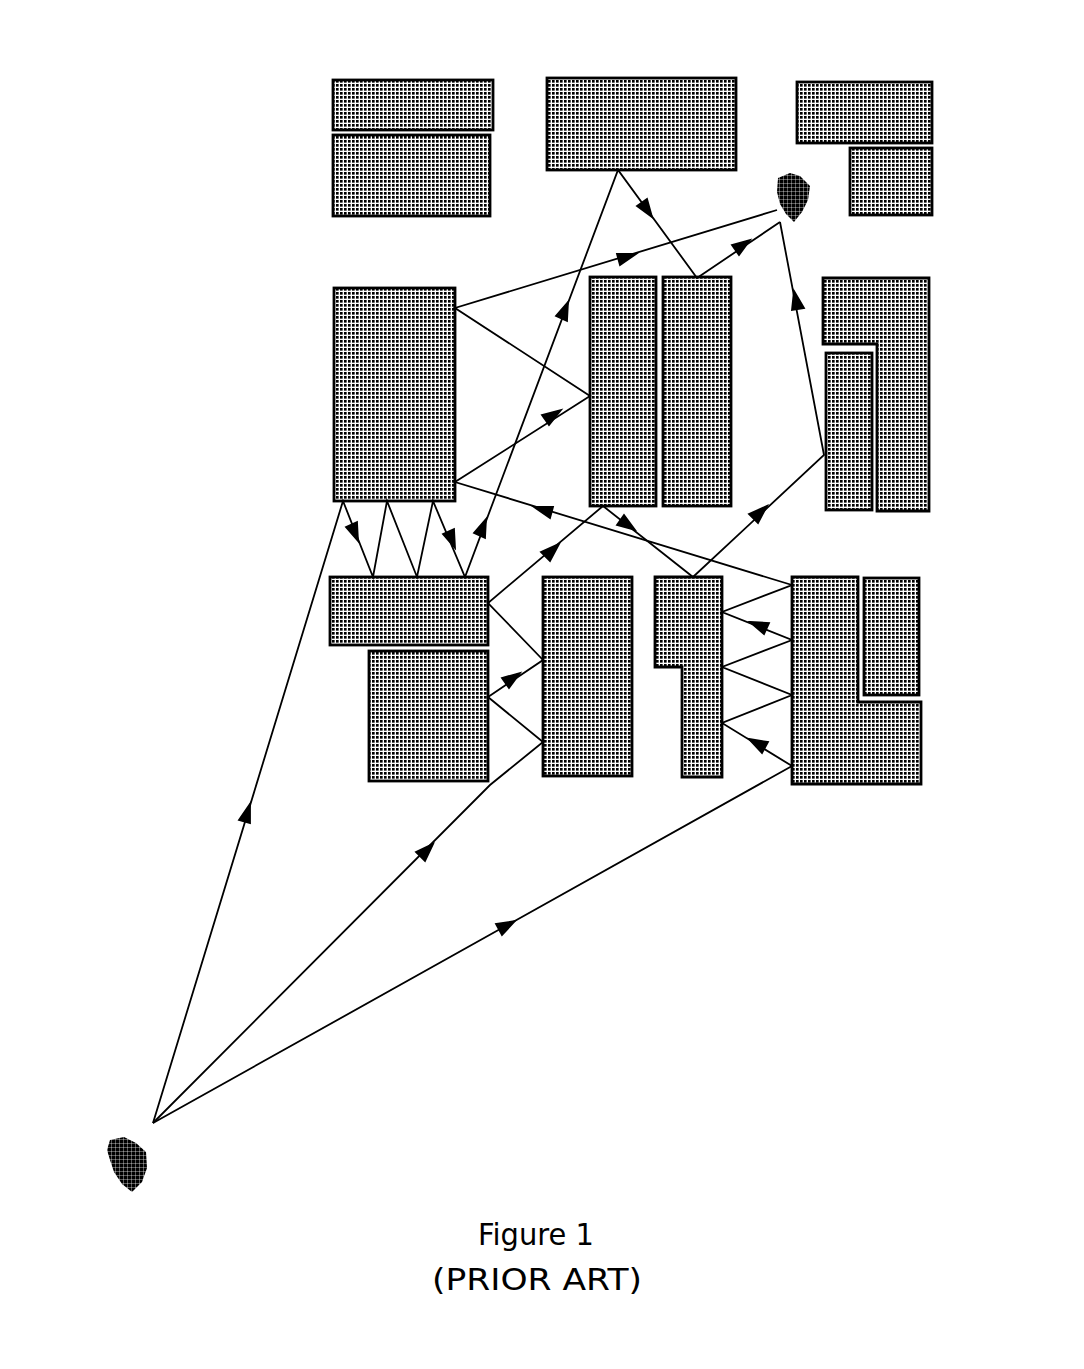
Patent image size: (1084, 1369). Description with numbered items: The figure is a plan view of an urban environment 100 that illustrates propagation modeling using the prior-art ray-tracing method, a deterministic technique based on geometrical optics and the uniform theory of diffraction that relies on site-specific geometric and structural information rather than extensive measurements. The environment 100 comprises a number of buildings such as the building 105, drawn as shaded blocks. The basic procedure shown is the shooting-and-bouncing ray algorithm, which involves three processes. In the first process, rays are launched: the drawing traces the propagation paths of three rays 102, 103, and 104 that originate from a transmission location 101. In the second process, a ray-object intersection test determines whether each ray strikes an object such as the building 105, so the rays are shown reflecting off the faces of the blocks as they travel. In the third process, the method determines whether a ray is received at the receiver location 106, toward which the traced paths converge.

The urban environment 100 is at (495, 612).
The transmission location 101 is at (98, 1132).
The ray 102 is at (453, 952).
The ray 103 is at (387, 892).
The ray 104 is at (233, 863).
The building 105 is at (350, 217).
The receiver location 106 is at (766, 152).